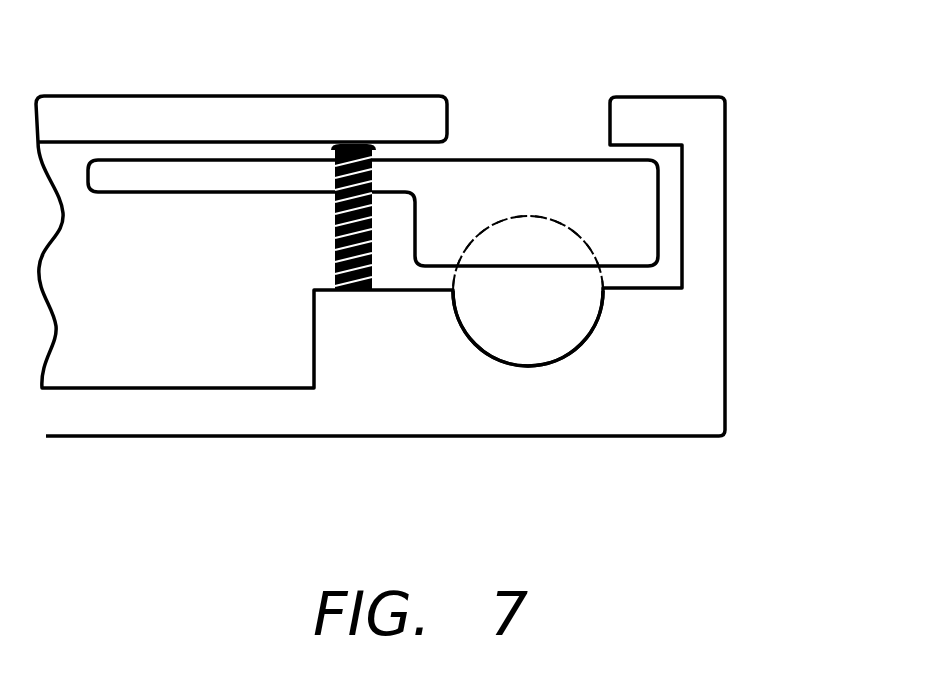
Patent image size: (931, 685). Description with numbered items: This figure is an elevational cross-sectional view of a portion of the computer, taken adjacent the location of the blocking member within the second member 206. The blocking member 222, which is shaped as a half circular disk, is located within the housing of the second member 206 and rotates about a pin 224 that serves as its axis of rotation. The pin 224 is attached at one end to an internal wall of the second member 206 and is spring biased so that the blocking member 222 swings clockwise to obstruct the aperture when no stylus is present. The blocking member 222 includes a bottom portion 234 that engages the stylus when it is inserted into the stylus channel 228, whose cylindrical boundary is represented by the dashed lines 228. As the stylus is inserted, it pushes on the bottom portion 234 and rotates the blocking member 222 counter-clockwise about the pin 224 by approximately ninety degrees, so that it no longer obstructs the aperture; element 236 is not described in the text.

The second member 206 is at (687, 95).
The blocking member 222 is at (515, 160).
The pin 224 is at (355, 147).
The stylus channel 228 is at (537, 318).
The bottom portion 234 is at (552, 243).
The socket 236 is at (603, 280).